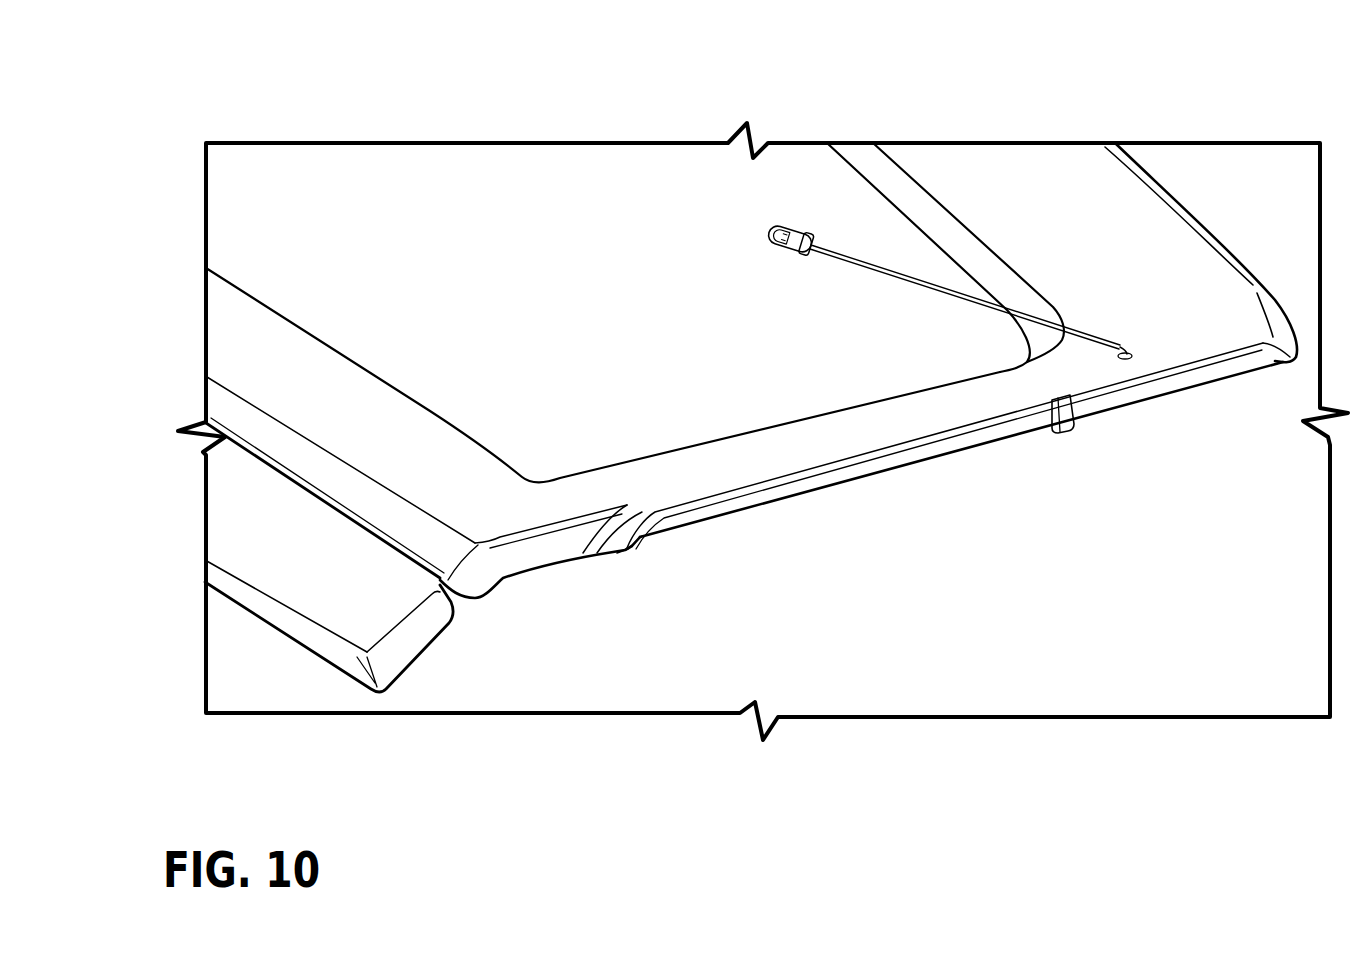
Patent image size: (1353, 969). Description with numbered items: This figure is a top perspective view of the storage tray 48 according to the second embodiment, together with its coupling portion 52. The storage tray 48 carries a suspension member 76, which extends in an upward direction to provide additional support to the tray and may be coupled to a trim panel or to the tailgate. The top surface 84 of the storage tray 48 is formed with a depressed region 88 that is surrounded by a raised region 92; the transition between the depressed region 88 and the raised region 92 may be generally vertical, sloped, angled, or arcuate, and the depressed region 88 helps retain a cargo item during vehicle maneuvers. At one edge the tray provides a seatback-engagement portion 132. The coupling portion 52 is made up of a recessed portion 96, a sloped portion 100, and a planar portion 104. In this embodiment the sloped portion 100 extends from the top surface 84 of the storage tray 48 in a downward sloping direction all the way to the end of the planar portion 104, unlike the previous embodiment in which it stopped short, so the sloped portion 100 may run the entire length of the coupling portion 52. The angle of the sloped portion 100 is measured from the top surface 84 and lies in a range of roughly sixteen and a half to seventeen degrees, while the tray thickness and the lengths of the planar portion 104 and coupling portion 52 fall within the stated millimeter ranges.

The storage tray 48 is at (987, 193).
The coupling portion 52 is at (617, 552).
The suspension member 76 is at (1032, 306).
The top surface 84 is at (1160, 242).
The depressed region 88 is at (556, 212).
The raised region 92 is at (235, 345).
The recessed portion 96 is at (640, 547).
The sloped portion 100 is at (585, 553).
The planar portion 104 is at (597, 553).
The seatback-engagement portion 132 is at (258, 530).